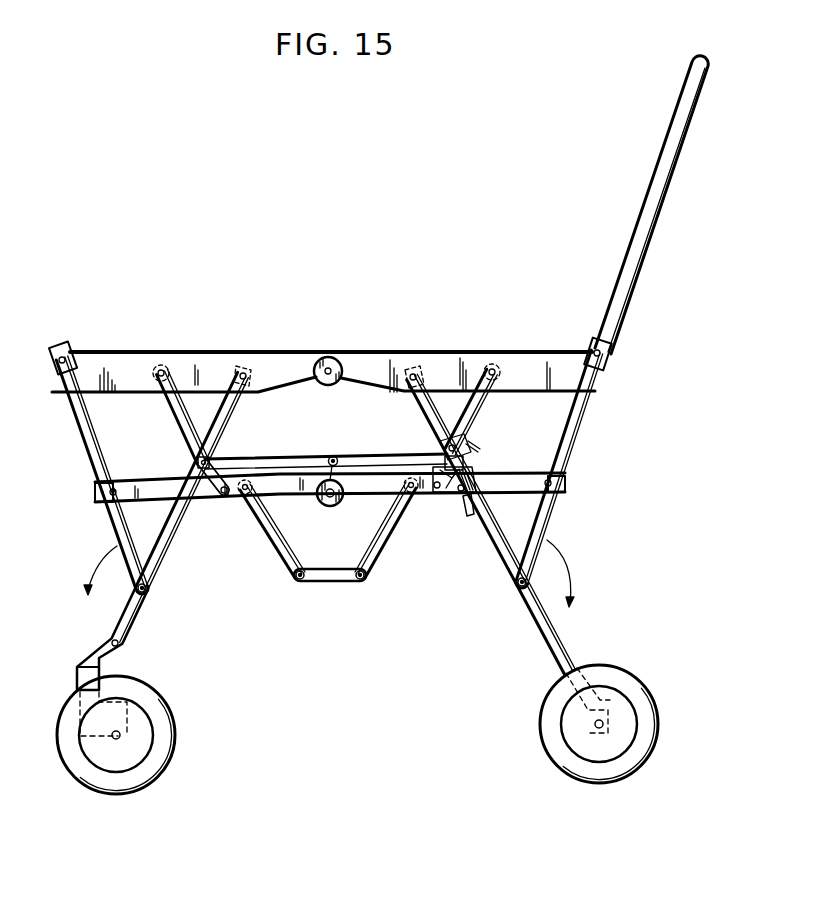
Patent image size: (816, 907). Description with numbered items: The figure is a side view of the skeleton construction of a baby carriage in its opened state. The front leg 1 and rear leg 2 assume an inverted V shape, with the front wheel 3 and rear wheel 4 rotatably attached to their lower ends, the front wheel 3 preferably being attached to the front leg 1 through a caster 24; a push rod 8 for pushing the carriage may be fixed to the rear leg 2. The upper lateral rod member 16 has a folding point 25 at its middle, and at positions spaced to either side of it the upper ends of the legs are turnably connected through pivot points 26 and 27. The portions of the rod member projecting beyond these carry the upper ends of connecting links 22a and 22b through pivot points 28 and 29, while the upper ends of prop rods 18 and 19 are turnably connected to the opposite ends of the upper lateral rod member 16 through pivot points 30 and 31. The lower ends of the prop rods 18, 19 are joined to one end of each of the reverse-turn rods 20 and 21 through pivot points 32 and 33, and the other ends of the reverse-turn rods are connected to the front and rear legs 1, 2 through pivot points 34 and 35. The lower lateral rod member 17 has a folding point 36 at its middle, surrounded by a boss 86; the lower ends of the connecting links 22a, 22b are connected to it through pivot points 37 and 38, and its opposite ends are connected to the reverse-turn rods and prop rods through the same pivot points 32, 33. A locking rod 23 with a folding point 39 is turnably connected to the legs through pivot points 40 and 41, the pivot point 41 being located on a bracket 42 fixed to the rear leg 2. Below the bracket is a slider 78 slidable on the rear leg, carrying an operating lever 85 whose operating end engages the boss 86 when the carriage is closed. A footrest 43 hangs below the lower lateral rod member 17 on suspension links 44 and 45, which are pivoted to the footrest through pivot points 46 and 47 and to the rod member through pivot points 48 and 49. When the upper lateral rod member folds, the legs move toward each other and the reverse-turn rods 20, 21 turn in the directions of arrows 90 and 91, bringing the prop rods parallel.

The front leg 1 is at (128, 618).
The rear leg 2 is at (560, 628).
The front wheel 3 is at (160, 740).
The rear wheel 4 is at (645, 736).
The push rod 8 is at (668, 113).
The upper lateral rod member 16 is at (446, 350).
The lower lateral rod member 17 is at (532, 474).
The prop rod 18 is at (82, 445).
The prop rod 19 is at (578, 432).
The reverse-turn rod 20 is at (110, 518).
The reverse-turn rod 21 is at (546, 528).
The connecting link 22a is at (183, 408).
The connecting link 22b is at (486, 404).
The locking rod 23 is at (287, 455).
The caster 24 is at (76, 675).
The folding point 25 is at (330, 358).
The pivot point 26 is at (244, 368).
The pivot point 27 is at (413, 370).
The pivot point 28 is at (163, 365).
The pivot point 29 is at (494, 366).
The pivot point 30 is at (62, 352).
The pivot point 31 is at (604, 352).
The pivot point 32 is at (95, 490).
The pivot point 33 is at (565, 487).
The pivot point 34 is at (150, 590).
The pivot point 35 is at (516, 585).
The folding point 36 is at (324, 503).
The pivot point 37 is at (212, 500).
The pivot point 38 is at (437, 494).
The folding point 39 is at (333, 455).
The pivot point 40 is at (197, 462).
The pivot point 41 is at (438, 456).
The bracket 42 is at (446, 442).
The footrest 43 is at (330, 582).
The suspension link 44 is at (275, 541).
The suspension link 45 is at (386, 542).
The pivot point 46 is at (300, 582).
The pivot point 47 is at (362, 582).
The pivot point 48 is at (245, 494).
The pivot point 49 is at (410, 493).
The slider 78 is at (470, 473).
The operating lever 85 is at (468, 515).
The boss 86 is at (338, 503).
The arrow 90 is at (87, 575).
The arrow 91 is at (580, 570).